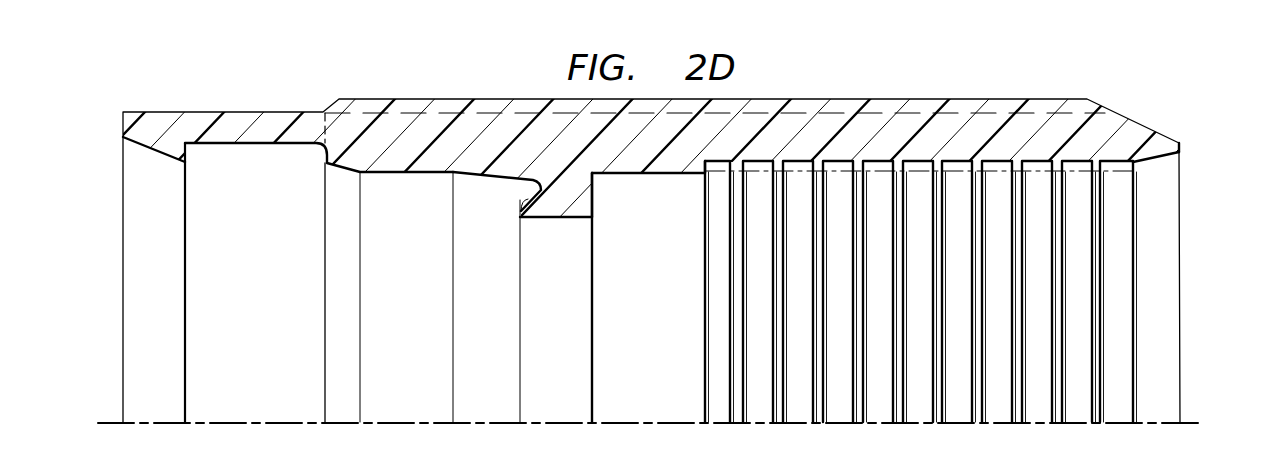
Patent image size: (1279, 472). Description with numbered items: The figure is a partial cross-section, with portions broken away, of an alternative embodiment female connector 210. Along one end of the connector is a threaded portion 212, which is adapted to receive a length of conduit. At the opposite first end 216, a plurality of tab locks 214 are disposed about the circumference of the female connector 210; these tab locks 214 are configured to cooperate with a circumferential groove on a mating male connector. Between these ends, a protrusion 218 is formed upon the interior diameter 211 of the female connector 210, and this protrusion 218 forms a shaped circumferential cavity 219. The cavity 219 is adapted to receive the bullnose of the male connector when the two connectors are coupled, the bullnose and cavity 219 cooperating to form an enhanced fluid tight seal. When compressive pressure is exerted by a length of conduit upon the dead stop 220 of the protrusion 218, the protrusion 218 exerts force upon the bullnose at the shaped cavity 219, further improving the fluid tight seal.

The female connector 210 is at (368, 86).
The tab locks 214 is at (163, 116).
The first end 216 is at (340, 178).
The shaped circumferential cavity 219 is at (542, 187).
The protrusion 218 is at (553, 218).
The dead stop 220 is at (593, 178).
The interior diameter 211 is at (671, 184).
The threaded portion 212 is at (1115, 183).